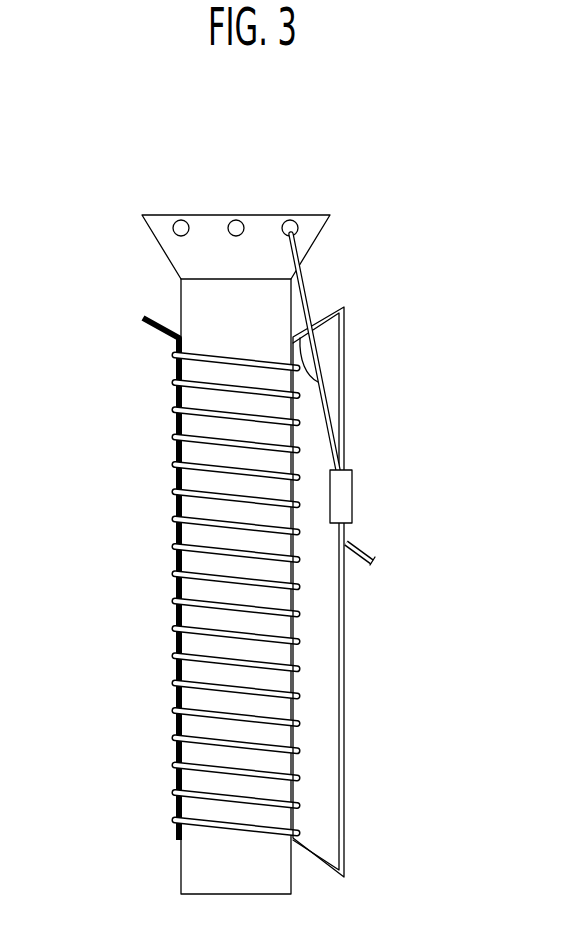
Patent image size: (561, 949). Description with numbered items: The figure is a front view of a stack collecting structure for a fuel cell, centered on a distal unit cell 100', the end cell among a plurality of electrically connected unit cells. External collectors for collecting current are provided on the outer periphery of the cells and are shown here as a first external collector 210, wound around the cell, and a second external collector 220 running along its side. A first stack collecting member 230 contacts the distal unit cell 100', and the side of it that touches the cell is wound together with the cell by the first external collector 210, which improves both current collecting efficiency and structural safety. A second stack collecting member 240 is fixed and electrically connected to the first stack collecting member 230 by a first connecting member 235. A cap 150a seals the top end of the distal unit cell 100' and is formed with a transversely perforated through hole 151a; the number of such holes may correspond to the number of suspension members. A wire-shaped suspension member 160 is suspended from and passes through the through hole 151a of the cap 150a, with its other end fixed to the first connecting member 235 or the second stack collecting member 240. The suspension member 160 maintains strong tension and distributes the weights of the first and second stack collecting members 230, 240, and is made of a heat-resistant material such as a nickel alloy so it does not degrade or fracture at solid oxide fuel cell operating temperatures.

The distal unit cell 100' is at (171, 576).
The cap 150a is at (268, 229).
The through hole 151a is at (237, 221).
The suspension member 160 is at (307, 292).
The first external collector 210 is at (250, 800).
The second external collector 220 is at (177, 532).
The first stack collecting member 230 is at (295, 437).
The first connecting member 235 is at (355, 480).
The second stack collecting member 240 is at (363, 548).